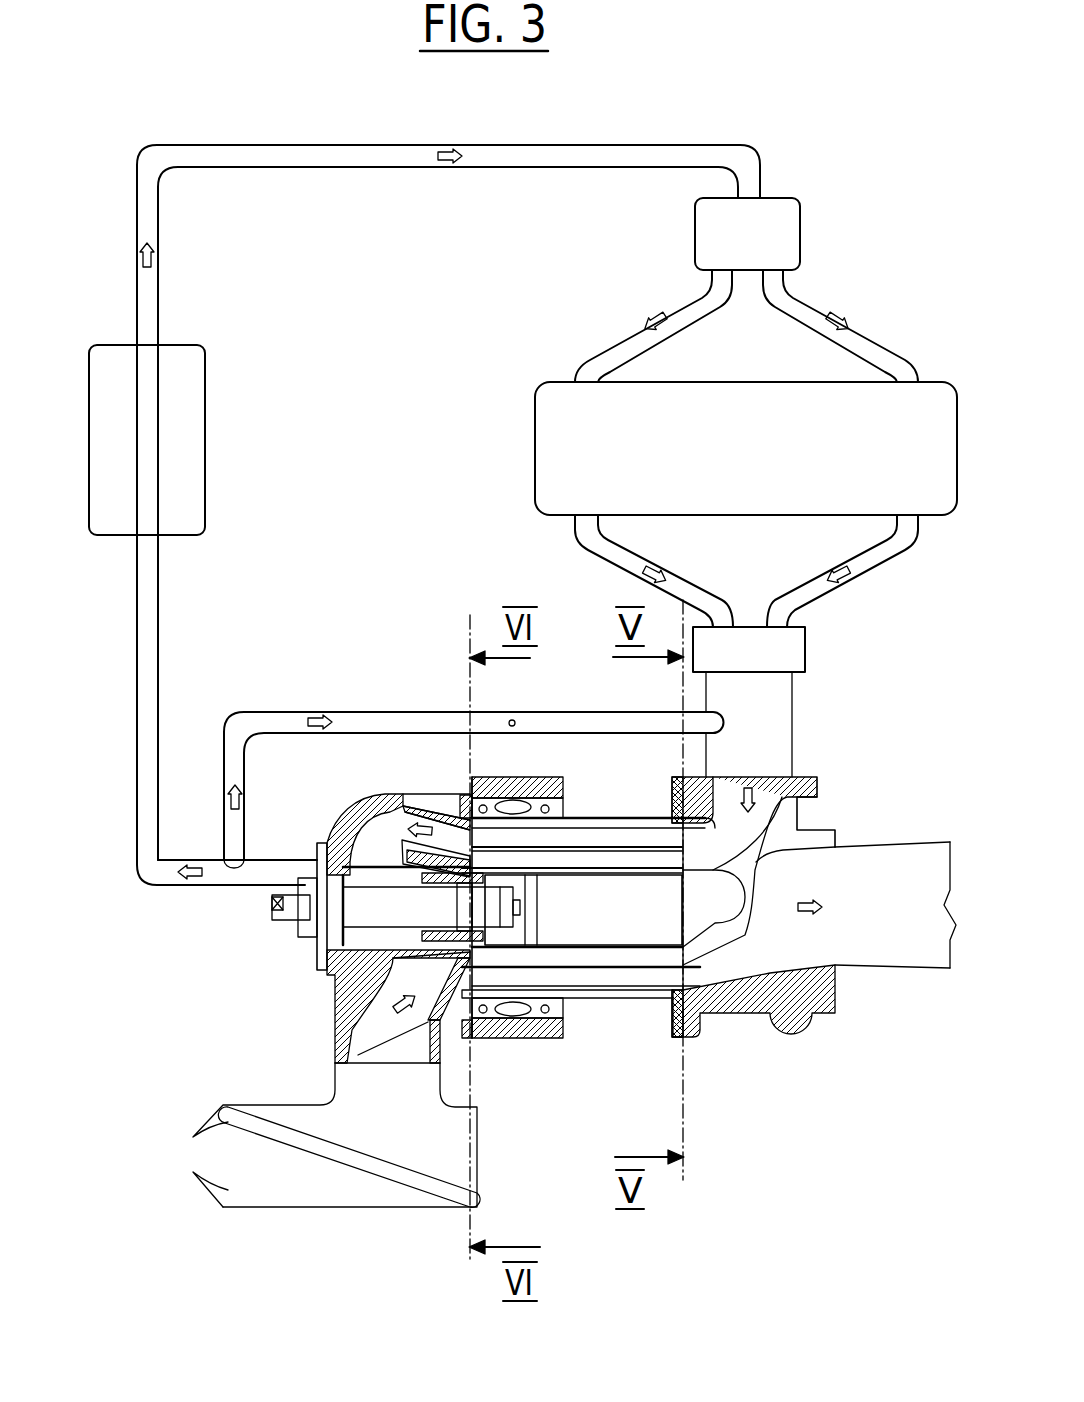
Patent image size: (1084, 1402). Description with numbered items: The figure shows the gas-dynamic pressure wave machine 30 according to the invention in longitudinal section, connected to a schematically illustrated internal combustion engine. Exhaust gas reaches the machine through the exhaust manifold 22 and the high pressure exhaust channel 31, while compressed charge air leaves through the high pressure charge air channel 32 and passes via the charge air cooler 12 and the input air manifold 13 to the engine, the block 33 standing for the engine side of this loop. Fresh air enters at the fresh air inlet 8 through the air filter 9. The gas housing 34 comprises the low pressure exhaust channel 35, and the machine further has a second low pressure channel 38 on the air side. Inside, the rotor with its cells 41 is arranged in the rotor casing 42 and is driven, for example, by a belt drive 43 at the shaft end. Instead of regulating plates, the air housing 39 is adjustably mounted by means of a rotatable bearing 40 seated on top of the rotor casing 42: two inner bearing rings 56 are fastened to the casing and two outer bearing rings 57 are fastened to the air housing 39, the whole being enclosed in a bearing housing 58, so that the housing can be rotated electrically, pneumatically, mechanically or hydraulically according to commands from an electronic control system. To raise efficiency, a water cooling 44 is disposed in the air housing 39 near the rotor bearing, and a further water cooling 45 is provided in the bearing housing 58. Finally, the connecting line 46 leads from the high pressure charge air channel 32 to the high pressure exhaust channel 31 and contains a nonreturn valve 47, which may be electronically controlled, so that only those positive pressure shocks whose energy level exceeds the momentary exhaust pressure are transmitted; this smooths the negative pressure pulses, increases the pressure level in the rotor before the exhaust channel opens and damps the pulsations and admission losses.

The fresh air inlet 8 is at (200, 1155).
The air filter 9 is at (380, 1163).
The charge air cooler 12 is at (176, 443).
The input air manifold 13 is at (772, 228).
The exhaust manifold 22 is at (775, 648).
The pressure wave machine 30 is at (250, 971).
The high pressure exhaust channel 31 is at (768, 790).
The high pressure charge air channel 32 is at (290, 867).
The engine cooling jacket 33 is at (562, 441).
The gas housing 34 is at (797, 1017).
The low pressure exhaust channel 35 is at (793, 945).
The low pressure channel 38 is at (413, 1025).
The air housing 39 is at (353, 987).
The rotatable bearing 40 is at (630, 1006).
The cells 41 is at (583, 1000).
The rotor casing 42 is at (640, 815).
The belt drive 43 is at (292, 913).
The water cooling 44 is at (405, 800).
The water cooling 45 is at (510, 1040).
The connecting line 46 is at (280, 720).
The nonreturn valve 47 is at (514, 722).
The inner bearing rings 56 is at (488, 775).
The outer bearing rings 57 is at (463, 800).
The bearing housing 58 is at (545, 1040).